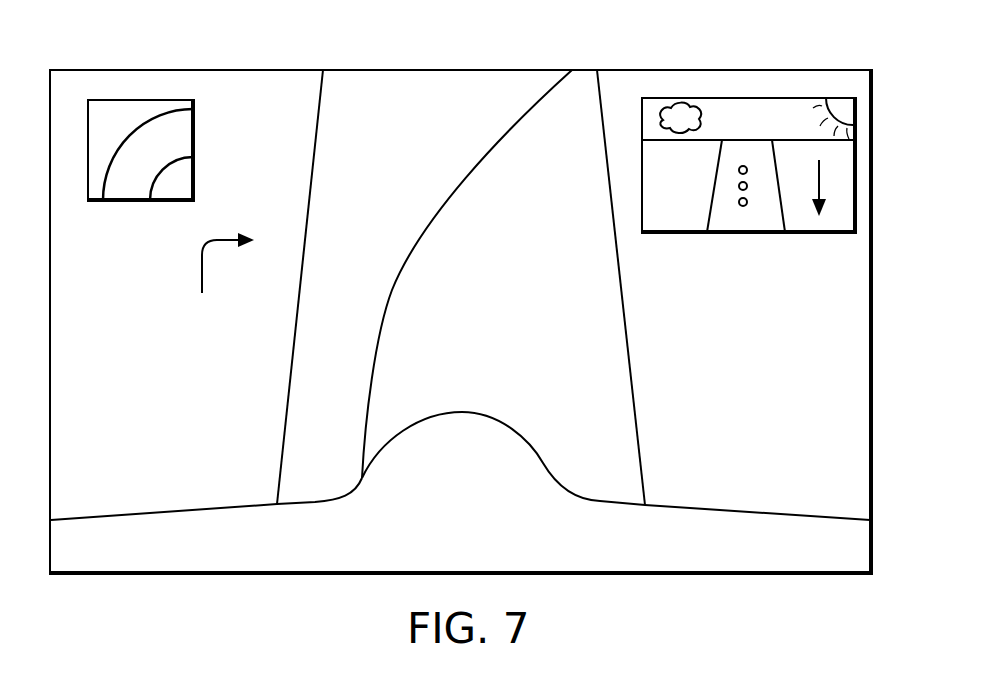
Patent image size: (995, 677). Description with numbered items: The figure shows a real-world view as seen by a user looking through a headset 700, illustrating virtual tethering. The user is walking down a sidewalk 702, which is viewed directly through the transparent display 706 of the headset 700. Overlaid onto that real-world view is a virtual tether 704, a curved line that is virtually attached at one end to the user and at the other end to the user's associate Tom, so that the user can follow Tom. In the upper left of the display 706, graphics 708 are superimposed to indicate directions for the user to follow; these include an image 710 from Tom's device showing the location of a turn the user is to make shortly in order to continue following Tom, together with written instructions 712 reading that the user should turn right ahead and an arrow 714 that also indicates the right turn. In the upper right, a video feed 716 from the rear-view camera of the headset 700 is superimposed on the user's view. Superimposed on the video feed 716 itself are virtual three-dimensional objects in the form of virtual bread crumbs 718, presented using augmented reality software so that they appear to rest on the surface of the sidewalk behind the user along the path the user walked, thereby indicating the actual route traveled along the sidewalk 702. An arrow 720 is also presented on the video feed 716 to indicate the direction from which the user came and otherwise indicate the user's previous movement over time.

The headset 700 is at (848, 558).
The sidewalk 702 is at (628, 483).
The virtual tether 704 is at (471, 160).
The transparent display 706 is at (127, 496).
The graphics 708 is at (213, 110).
The image 710 is at (140, 100).
The written instructions 712 is at (132, 260).
The arrow 714 is at (202, 273).
The video feed 716 is at (813, 99).
The virtual bread crumbs 718 is at (743, 164).
The arrow 720 is at (829, 167).